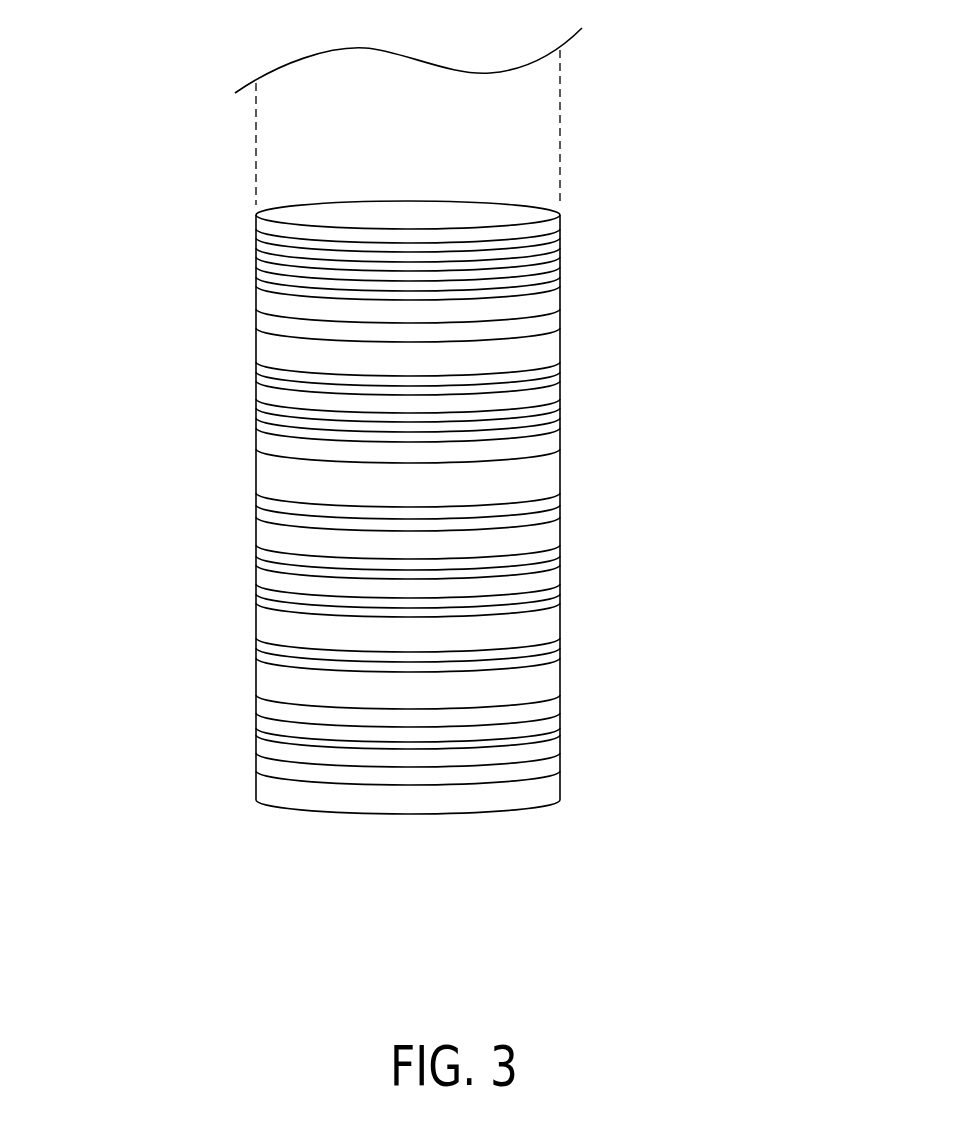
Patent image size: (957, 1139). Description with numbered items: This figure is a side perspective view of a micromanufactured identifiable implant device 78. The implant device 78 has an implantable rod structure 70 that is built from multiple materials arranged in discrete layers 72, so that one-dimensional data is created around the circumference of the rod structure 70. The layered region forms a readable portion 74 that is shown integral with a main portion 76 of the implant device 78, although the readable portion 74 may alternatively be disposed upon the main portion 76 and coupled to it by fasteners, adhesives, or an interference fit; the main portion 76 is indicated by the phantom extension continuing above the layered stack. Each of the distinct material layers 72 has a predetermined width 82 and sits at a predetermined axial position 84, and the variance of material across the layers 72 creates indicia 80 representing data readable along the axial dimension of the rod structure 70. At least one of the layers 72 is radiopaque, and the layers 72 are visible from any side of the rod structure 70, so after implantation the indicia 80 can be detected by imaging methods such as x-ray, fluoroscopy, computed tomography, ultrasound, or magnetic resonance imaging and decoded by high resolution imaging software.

The implantable rod structure 70 is at (628, 289).
The discrete layers 72 is at (568, 233).
The readable portion 74 is at (220, 281).
The main portion 76 is at (230, 127).
The implant device 78 is at (797, 139).
The indicia 80 is at (200, 458).
The predetermined width 82 is at (255, 656).
The predetermined axial position 84 is at (256, 727).